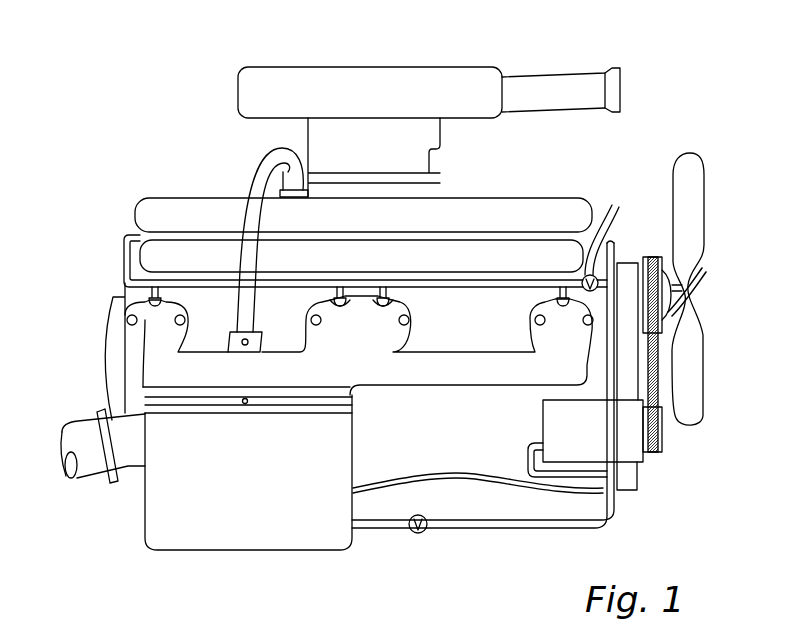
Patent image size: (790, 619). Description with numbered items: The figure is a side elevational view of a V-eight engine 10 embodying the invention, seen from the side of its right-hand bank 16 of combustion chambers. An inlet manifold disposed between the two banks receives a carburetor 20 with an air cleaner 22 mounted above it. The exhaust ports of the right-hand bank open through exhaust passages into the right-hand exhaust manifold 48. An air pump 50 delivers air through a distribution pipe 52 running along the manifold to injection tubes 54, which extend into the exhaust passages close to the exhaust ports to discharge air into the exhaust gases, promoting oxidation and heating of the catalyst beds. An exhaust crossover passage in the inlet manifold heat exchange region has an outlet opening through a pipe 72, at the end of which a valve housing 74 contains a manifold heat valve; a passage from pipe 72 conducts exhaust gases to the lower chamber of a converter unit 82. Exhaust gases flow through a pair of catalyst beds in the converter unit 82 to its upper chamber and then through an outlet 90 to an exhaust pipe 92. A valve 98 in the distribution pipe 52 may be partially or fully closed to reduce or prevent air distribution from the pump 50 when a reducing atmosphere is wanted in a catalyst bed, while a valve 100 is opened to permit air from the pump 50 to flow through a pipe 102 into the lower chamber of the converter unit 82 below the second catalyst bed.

The V-8 engine 10 is at (118, 278).
The right-hand bank 16 is at (163, 208).
The carburetor 20 is at (405, 127).
The air cleaner 22 is at (420, 78).
The right-hand exhaust manifold 48 is at (470, 365).
The air pump 50 is at (630, 445).
The distribution pipe 52 is at (523, 280).
The injection tubes 54 is at (380, 298).
The pipe 72 is at (270, 165).
The valve housing 74 is at (257, 338).
The converter unit 82 is at (360, 486).
The outlet 90 is at (128, 457).
The exhaust pipe 92 is at (85, 470).
The valve 98 is at (609, 236).
The valve 100 is at (410, 532).
The pipe 102 is at (520, 525).